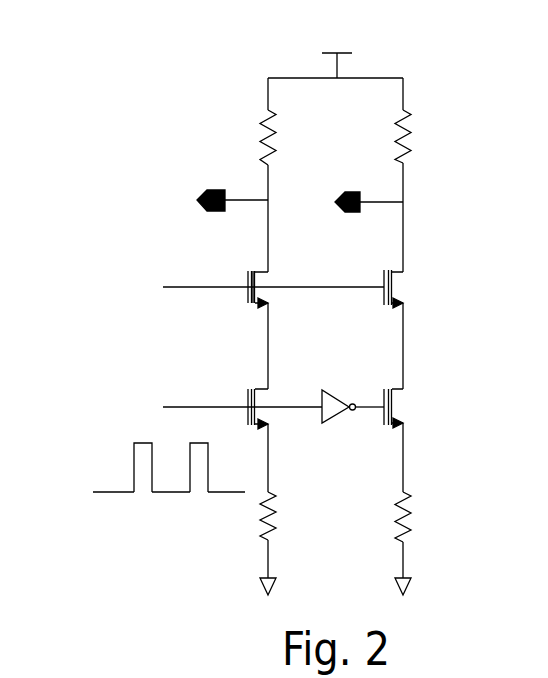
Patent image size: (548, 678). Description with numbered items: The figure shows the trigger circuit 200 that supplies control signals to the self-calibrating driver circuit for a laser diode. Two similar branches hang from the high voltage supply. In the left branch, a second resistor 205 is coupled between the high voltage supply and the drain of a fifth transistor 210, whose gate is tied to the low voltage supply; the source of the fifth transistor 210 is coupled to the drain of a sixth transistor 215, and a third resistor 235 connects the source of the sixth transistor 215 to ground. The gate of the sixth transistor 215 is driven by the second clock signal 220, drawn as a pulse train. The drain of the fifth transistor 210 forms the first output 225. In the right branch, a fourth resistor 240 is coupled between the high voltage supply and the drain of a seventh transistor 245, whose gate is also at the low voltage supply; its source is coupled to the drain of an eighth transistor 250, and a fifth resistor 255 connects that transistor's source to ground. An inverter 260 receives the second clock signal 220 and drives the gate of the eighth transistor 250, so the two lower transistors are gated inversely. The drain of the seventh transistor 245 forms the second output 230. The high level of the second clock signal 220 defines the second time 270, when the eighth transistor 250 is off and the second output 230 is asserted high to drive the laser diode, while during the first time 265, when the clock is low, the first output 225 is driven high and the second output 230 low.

The trigger circuit 200 is at (108, 66).
The second resistor 205 is at (262, 118).
The fifth transistor 210 is at (245, 305).
The sixth transistor 215 is at (193, 372).
The second clock signal 220 is at (163, 407).
The first output 225 is at (206, 195).
The second output 230 is at (352, 190).
The third resistor 235 is at (262, 537).
The fourth resistor 240 is at (413, 115).
The seventh transistor 245 is at (397, 288).
The eighth transistor 250 is at (391, 407).
The fifth resistor 255 is at (414, 512).
The inverter 260 is at (333, 392).
The first time 265 is at (168, 492).
The second time 270 is at (134, 443).